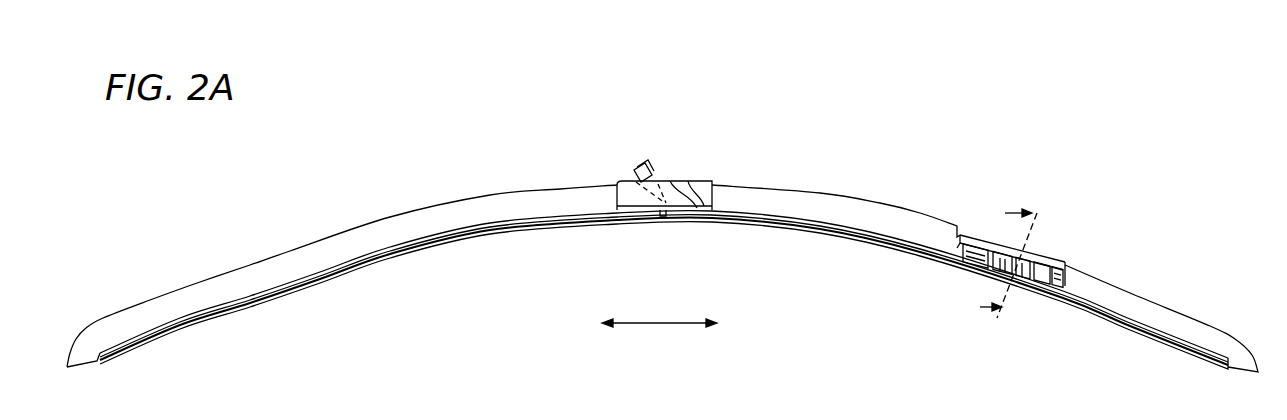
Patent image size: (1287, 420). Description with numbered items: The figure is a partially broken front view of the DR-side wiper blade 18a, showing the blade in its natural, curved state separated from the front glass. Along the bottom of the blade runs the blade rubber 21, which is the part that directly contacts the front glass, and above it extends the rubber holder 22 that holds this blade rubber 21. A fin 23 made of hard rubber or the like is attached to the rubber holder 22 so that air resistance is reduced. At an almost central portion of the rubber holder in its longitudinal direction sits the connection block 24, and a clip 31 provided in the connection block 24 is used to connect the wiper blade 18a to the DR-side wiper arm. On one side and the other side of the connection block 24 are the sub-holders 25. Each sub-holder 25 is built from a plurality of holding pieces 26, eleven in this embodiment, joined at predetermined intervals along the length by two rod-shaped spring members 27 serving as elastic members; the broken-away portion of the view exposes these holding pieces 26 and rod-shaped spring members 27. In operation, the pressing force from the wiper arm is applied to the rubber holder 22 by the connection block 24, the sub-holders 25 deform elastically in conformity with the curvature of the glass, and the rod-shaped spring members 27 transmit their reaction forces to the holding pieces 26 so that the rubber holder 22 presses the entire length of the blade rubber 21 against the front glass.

The DR-side wiper blade 18a is at (1063, 172).
The blade rubber 21 is at (1108, 336).
The rubber holder 22 is at (1100, 262).
The fin 23 is at (1212, 325).
The connection block 24 is at (700, 180).
The sub-holder 25 is at (418, 202).
The holding piece 26 is at (970, 252).
The rod-shaped spring member 27 is at (1000, 264).
The clip 31 is at (650, 163).